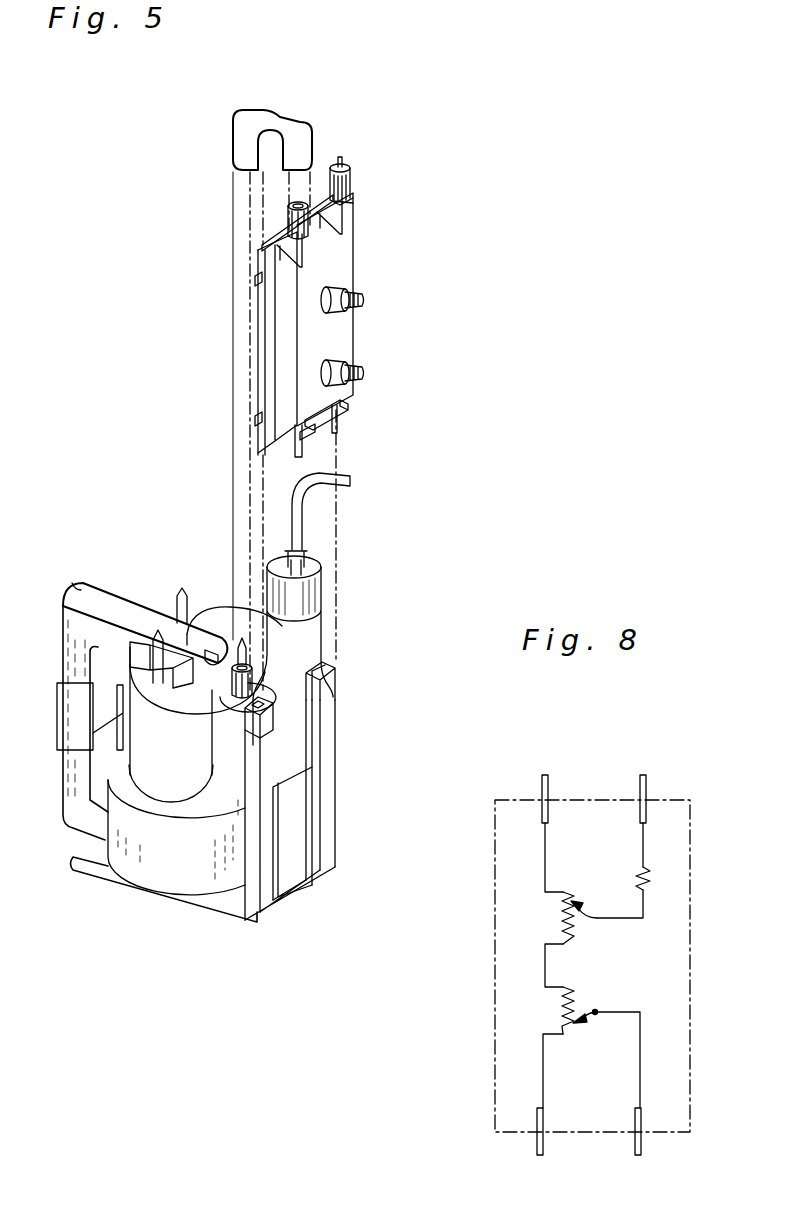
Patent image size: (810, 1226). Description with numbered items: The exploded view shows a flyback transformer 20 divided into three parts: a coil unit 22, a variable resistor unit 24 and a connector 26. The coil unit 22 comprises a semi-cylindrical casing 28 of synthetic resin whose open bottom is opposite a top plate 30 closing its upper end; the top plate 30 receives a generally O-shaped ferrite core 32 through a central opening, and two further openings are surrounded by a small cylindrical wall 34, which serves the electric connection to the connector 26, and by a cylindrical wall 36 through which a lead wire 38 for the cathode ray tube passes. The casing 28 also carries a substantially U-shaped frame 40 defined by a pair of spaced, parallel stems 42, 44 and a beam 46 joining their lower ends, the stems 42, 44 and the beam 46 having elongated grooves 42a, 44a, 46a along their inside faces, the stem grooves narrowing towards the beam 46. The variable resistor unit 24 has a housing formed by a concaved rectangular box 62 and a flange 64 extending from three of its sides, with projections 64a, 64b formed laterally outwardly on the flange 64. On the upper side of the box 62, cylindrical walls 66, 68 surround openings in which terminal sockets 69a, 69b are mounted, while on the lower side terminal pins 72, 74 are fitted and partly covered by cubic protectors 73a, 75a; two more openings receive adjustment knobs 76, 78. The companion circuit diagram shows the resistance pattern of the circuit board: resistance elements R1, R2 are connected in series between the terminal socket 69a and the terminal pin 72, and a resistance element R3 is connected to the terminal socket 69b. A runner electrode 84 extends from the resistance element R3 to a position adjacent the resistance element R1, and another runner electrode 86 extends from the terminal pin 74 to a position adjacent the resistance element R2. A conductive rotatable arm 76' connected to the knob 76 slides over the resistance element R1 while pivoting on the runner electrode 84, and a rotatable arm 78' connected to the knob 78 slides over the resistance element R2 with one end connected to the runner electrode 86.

In FIG. 5, the flyback transformer 20 is at (494, 31).
In FIG. 5, the coil unit 22 is at (362, 652).
In FIG. 5, the variable resistor unit 24 is at (382, 261).
In FIG. 5, the connector 26 is at (345, 103).
In FIG. 5, the casing 28 is at (133, 855).
In FIG. 5, the top plate 30 is at (213, 602).
In FIG. 5, the ferrite core 32 is at (82, 639).
In FIG. 5, the cylindrical wall 34 is at (226, 690).
In FIG. 5, the cylindrical wall 36 is at (306, 626).
In FIG. 5, the lead wire 38 is at (304, 518).
In FIG. 5, the U-shaped frame 40 is at (333, 787).
In FIG. 5, the stem 42 is at (338, 742).
In FIG. 5, the elongated groove 42a is at (340, 700).
In FIG. 5, the stem 44 is at (270, 787).
In FIG. 5, the elongated groove 44a is at (234, 712).
In FIG. 5, the beam 46 is at (288, 885).
In FIG. 5, the elongated groove 46a is at (318, 878).
In FIG. 5, the rectangular box 62 is at (343, 330).
In FIG. 5, the flange 64 is at (272, 338).
In FIG. 5, the projection 64a is at (257, 278).
In FIG. 5, the projection 64b is at (257, 423).
In FIG. 5, the cylindrical wall 66 is at (305, 222).
In FIG. 5, the cylindrical wall 68 is at (352, 186).
In FIG. 5, the terminal socket 69a is at (290, 212).
In FIG. 8, the terminal socket 69a is at (545, 773).
In FIG. 5, the terminal socket 69b is at (345, 157).
In FIG. 8, the terminal socket 69b is at (645, 773).
In FIG. 5, the terminal pin 72 is at (303, 450).
In FIG. 8, the terminal pin 72 is at (539, 1140).
In FIG. 5, the cubic protector 73a is at (317, 436).
In FIG. 5, the terminal pin 74 is at (339, 418).
In FIG. 8, the terminal pin 74 is at (640, 1140).
In FIG. 5, the cubic protector 75a is at (346, 405).
In FIG. 5, the adjustment knob 76 is at (392, 284).
In FIG. 8, the rotatable arm 76' is at (663, 927).
In FIG. 5, the adjustment knob 78 is at (392, 378).
In FIG. 8, the rotatable arm 78' is at (620, 985).
In FIG. 8, the runner electrode 84 is at (615, 917).
In FIG. 8, the runner electrode 86 is at (640, 1040).
In FIG. 8, the resistance element R1 is at (560, 914).
In FIG. 8, the resistance element R2 is at (560, 1022).
In FIG. 8, the resistance element R3 is at (647, 874).